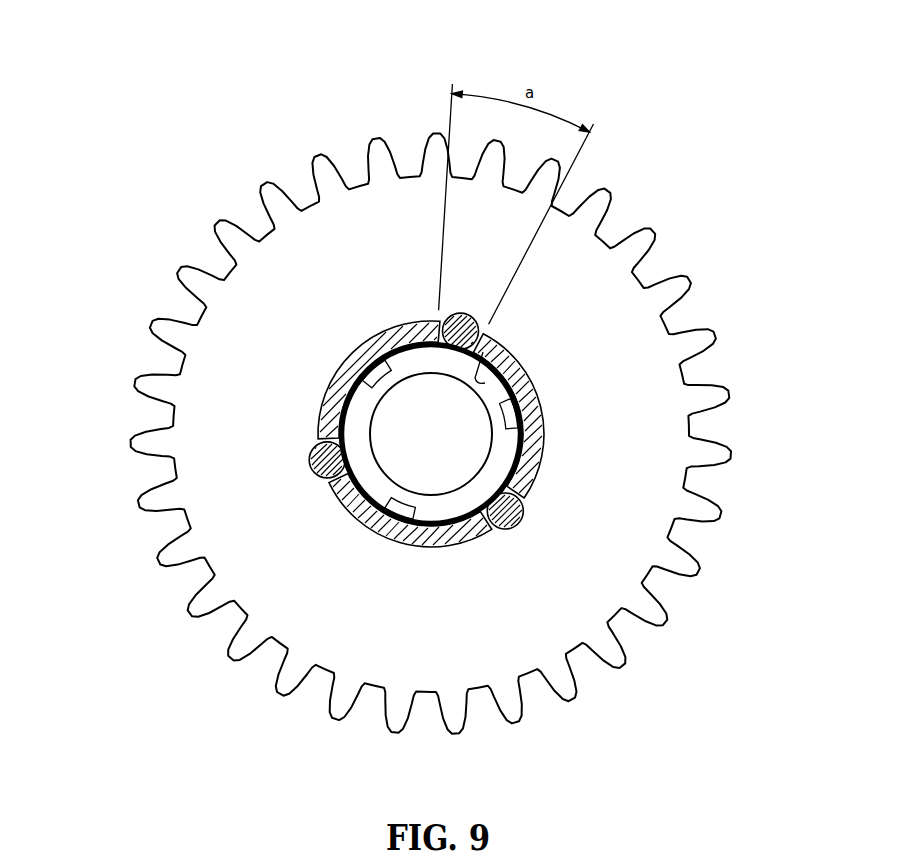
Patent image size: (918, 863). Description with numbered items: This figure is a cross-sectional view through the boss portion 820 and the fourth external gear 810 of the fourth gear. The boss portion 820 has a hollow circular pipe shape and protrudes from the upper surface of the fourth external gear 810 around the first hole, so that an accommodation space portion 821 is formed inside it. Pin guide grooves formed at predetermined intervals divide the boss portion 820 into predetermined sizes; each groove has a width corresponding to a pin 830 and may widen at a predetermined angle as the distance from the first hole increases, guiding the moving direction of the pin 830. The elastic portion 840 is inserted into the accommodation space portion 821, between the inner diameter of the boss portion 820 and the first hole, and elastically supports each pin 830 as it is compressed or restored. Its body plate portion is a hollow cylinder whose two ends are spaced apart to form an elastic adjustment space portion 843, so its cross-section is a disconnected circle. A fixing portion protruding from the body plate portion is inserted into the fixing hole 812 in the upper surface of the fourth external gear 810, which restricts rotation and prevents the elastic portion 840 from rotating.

The fourth external gear 810 is at (583, 337).
The fixing hole 812 is at (388, 366).
The boss portion 820 is at (432, 370).
The accommodation space portion 821 is at (505, 332).
The pin 830 is at (327, 465).
The elastic portion 840 is at (430, 518).
The elastic adjustment space portion 843 is at (405, 512).